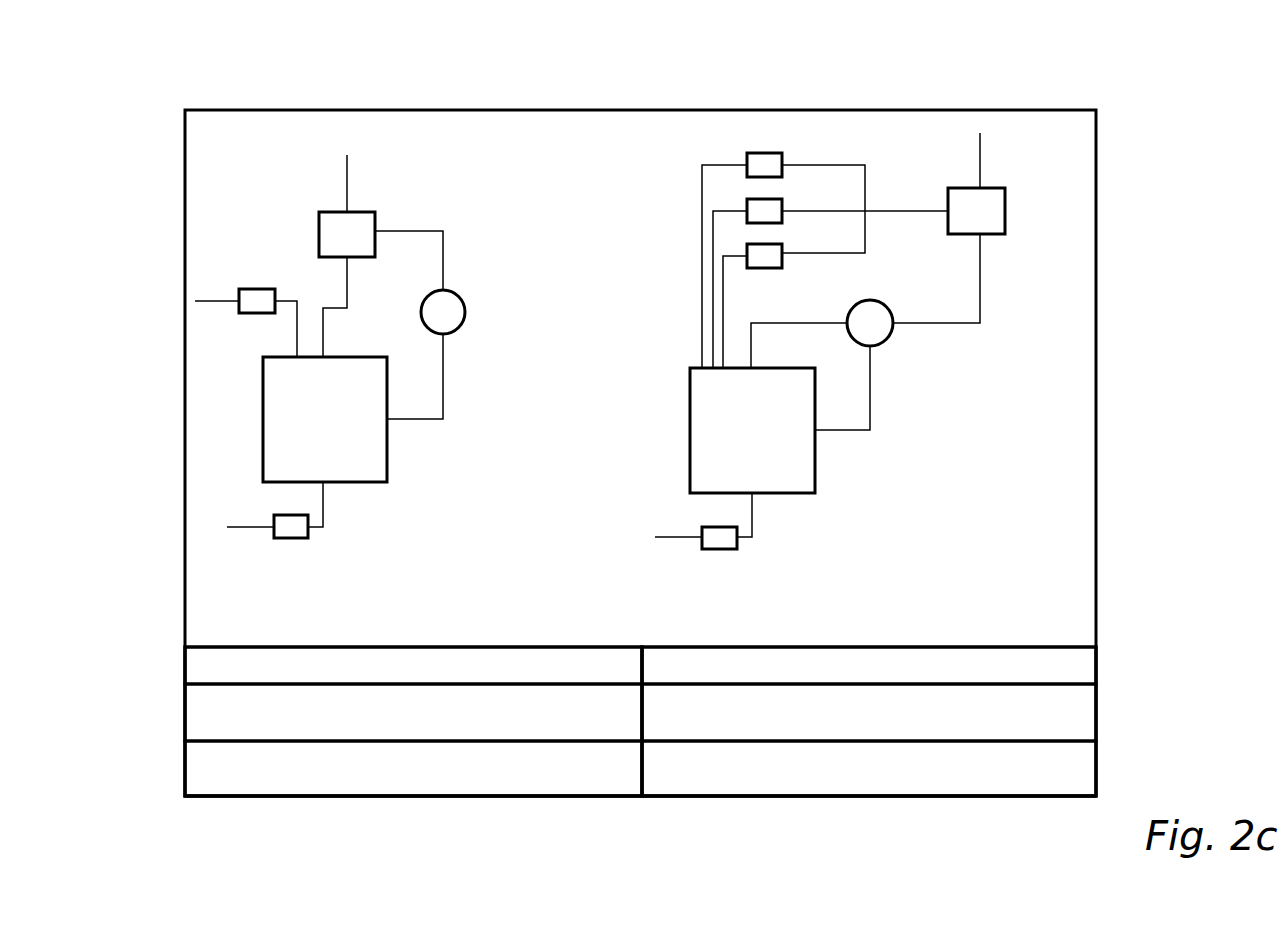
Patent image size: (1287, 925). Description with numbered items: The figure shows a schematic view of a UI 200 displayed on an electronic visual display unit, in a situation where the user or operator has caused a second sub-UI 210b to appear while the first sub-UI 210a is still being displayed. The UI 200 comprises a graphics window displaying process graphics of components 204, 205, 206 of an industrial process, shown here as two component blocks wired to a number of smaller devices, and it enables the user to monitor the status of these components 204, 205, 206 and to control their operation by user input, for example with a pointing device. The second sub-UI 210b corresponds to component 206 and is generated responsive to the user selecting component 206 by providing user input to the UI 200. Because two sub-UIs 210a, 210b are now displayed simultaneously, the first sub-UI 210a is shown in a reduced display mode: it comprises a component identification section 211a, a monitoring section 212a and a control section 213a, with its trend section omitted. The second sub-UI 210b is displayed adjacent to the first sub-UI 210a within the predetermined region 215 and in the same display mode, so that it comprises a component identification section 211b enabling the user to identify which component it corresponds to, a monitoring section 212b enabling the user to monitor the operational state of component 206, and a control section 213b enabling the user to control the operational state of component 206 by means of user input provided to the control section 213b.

The UI 200 is at (1136, 108).
The component 204 is at (263, 403).
The component 205 is at (378, 218).
The component 206 is at (815, 459).
The first sub-UI 210a is at (160, 666).
The second sub-UI 210b is at (1108, 739).
The component identification section 211a is at (375, 663).
The component identification section 211b is at (823, 663).
The monitoring section 212a is at (195, 730).
The monitoring section 212b is at (1085, 705).
The control section 213a is at (195, 787).
The control section 213b is at (960, 785).
The predetermined region 215 is at (481, 784).